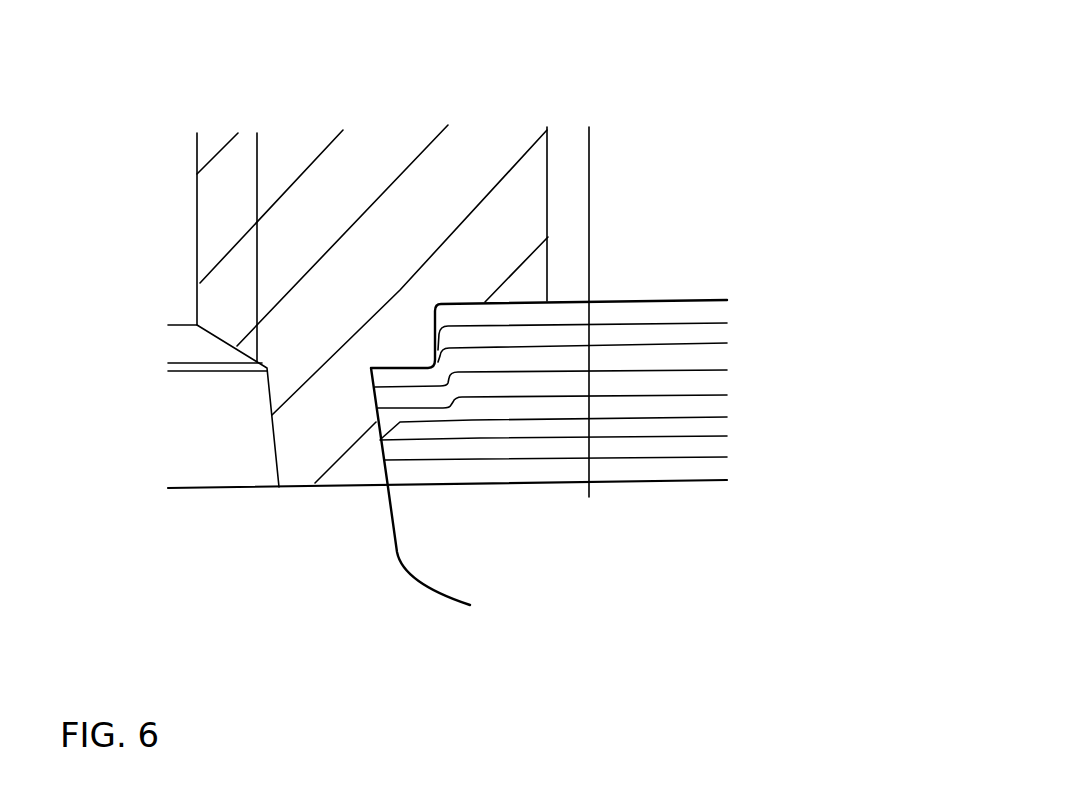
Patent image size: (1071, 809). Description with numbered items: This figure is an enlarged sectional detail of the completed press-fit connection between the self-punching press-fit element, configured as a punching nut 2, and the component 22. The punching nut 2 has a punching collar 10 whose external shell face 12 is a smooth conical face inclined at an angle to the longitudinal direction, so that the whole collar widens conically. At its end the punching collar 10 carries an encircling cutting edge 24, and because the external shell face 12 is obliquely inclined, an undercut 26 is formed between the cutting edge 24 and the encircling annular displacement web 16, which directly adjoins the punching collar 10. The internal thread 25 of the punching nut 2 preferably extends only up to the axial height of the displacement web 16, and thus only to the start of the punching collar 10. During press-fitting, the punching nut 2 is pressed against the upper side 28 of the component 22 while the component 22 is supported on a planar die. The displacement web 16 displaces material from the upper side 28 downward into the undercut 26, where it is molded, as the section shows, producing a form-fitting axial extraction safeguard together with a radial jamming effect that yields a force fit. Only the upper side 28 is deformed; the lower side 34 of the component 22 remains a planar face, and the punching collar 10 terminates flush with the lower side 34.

The punching nut 2 is at (525, 136).
The punching collar 10 is at (305, 442).
The external shell face 12 is at (378, 465).
The displacement web 16 is at (411, 334).
The component 22 is at (663, 358).
The cutting edge 24 is at (438, 493).
The internal thread 25 is at (222, 178).
The undercut 26 is at (387, 380).
The upper side 28 is at (618, 301).
The lower side 34 is at (647, 480).